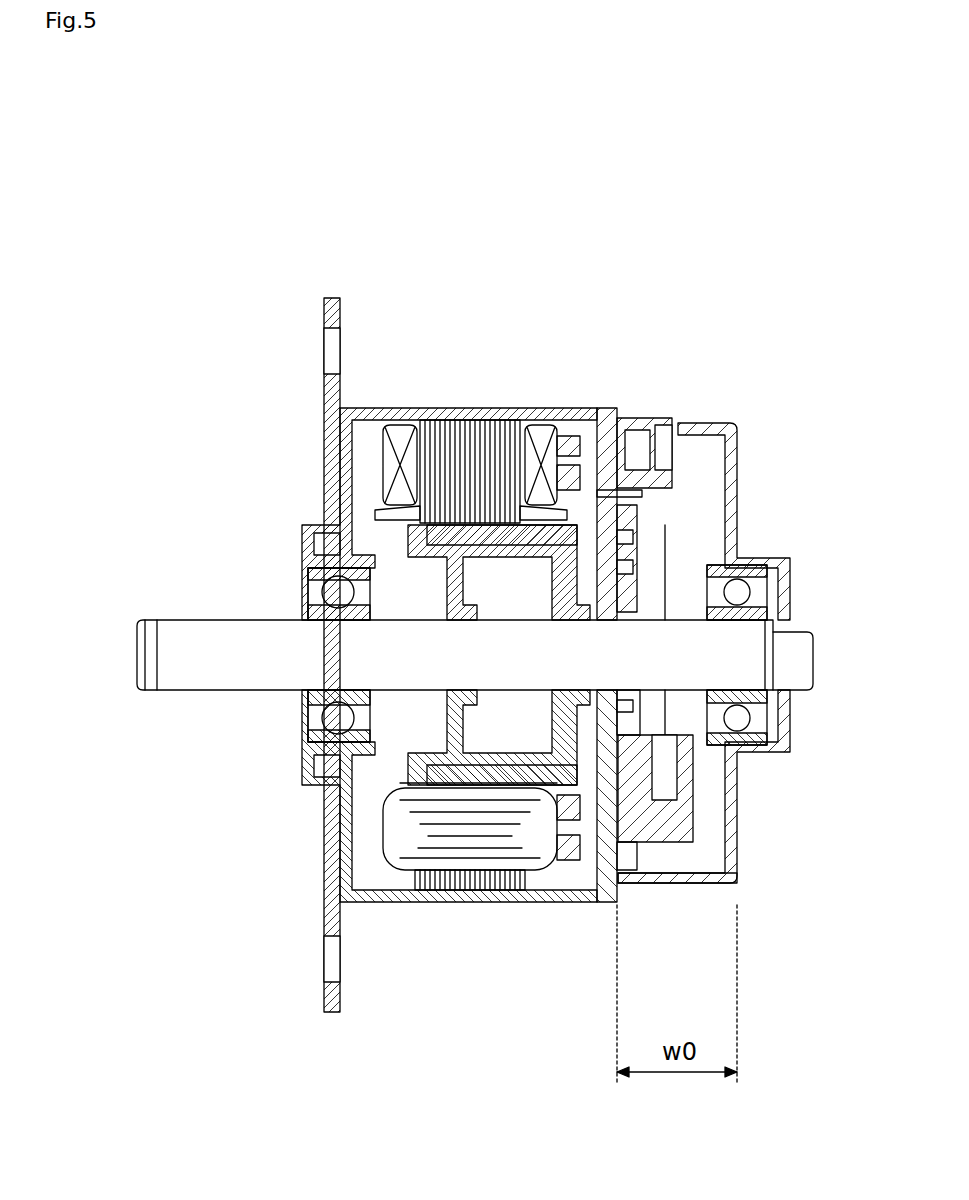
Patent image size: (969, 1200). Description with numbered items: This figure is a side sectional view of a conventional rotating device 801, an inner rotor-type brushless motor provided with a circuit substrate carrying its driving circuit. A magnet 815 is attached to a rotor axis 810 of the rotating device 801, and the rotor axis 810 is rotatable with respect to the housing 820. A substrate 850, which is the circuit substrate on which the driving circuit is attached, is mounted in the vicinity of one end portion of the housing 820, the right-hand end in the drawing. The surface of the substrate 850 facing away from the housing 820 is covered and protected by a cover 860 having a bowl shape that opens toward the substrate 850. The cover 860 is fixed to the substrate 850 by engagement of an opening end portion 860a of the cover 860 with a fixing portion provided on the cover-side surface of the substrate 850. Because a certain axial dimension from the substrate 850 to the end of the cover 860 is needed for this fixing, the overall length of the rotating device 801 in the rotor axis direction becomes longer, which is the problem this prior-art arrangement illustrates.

The rotating device 801 is at (178, 179).
The rotor axis 810 is at (181, 635).
The magnet 815 is at (578, 537).
The housing 820 is at (467, 407).
The substrate 850 is at (608, 407).
The cover 860 is at (740, 456).
The opening end portion 860a is at (690, 878).